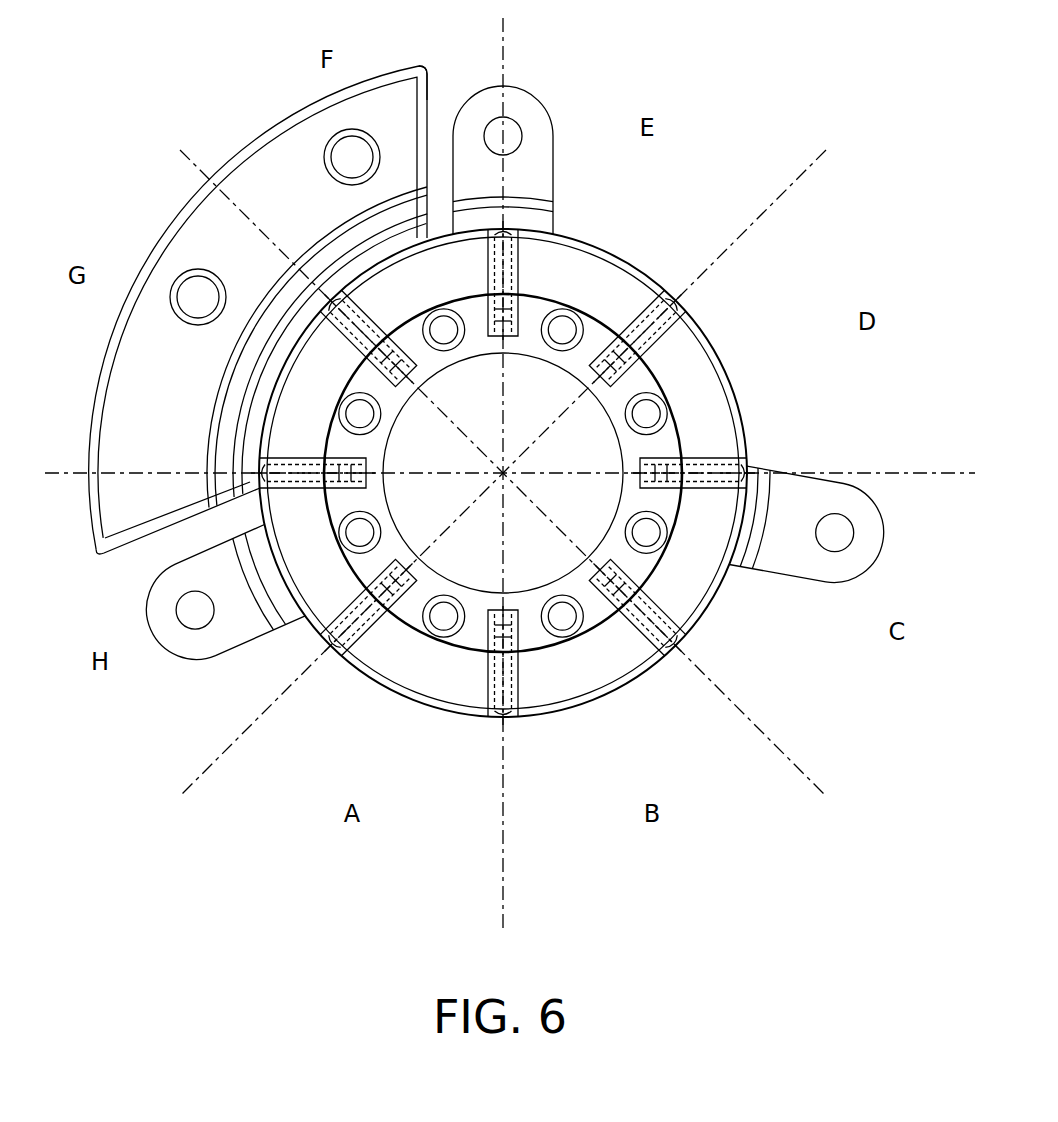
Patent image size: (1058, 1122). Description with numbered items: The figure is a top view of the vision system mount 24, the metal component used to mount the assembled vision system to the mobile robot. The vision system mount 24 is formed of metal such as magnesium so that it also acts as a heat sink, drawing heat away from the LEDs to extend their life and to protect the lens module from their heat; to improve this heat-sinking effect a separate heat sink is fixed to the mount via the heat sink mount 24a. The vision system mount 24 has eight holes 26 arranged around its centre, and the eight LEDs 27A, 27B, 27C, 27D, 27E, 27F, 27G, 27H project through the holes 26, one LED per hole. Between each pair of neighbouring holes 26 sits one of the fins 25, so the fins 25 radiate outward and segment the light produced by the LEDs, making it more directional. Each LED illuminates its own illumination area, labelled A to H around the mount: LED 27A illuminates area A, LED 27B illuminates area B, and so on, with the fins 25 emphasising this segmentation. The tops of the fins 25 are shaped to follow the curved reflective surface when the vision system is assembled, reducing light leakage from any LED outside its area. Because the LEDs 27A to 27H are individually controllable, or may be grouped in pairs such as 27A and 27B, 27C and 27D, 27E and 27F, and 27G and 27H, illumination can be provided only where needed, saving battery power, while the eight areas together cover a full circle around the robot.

The vision system mount 24 is at (234, 642).
The heat sink mount 24a is at (403, 90).
The fins 25 is at (678, 316).
The holes 26 is at (663, 418).
The LED 27A is at (446, 612).
The LED 27B is at (560, 612).
The LED 27C is at (635, 528).
The LED 27D is at (633, 419).
The LED 27E is at (562, 347).
The LED 27F is at (448, 347).
The LED 27G is at (375, 421).
The LED 27H is at (376, 526).